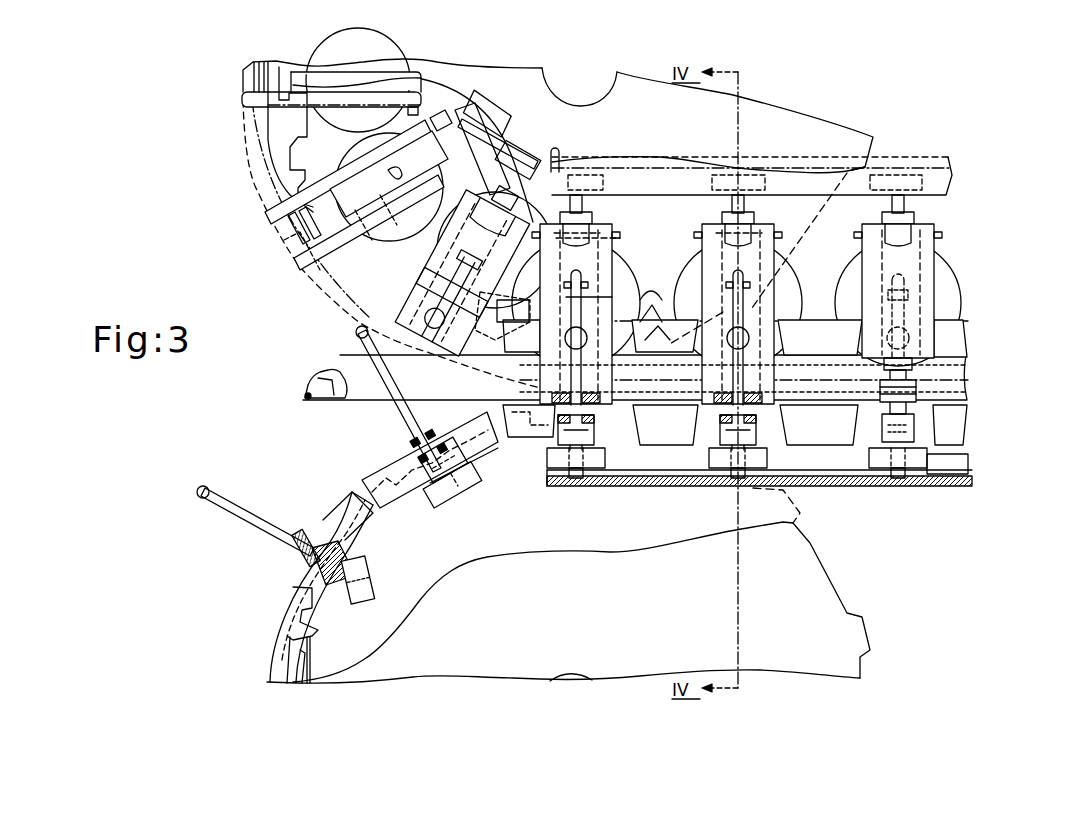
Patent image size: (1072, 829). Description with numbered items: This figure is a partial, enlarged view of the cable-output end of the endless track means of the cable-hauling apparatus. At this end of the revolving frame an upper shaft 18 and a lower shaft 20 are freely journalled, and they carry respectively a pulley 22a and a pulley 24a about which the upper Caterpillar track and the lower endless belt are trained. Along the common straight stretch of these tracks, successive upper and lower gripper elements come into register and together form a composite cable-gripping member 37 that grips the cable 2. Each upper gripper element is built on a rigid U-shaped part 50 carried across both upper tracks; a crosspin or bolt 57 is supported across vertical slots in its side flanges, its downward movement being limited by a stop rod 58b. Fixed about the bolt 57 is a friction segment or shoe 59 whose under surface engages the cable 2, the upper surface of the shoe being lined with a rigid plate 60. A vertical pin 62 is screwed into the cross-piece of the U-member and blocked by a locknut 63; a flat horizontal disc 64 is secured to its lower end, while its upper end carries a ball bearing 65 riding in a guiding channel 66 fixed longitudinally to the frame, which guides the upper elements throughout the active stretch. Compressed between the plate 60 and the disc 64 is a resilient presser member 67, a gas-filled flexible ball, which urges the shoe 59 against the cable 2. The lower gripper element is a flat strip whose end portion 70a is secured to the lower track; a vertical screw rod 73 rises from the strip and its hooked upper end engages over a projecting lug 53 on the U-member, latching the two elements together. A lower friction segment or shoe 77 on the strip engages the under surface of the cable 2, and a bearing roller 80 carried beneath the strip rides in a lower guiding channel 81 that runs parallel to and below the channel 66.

The cable 2 is at (328, 372).
The upper shaft 18 is at (595, 84).
The lower shaft 20 is at (580, 676).
The pulley 22a is at (457, 72).
The pulley 24a is at (810, 562).
The composite cable-gripping member 37 is at (393, 410).
The U-shaped part 50 is at (606, 229).
The lug 53 is at (600, 294).
The crosspin or bolt 57 is at (766, 341).
The stop rod 58b is at (614, 389).
The friction segment or shoe 59 is at (646, 324).
The rigid plate 60 is at (656, 283).
The vertical pin 62 is at (509, 206).
The locknut 63 is at (492, 196).
The flat horizontal disc 64 is at (616, 239).
The ball bearing 65 is at (515, 149).
The guiding channel 66 is at (645, 165).
The resilient presser member 67 is at (500, 294).
The end portion of strip 70a is at (593, 417).
The vertical screw rod 73 is at (581, 306).
The friction segment or shoe 77 is at (622, 440).
The bearing roller 80 is at (547, 462).
The guiding channel 81 is at (580, 488).